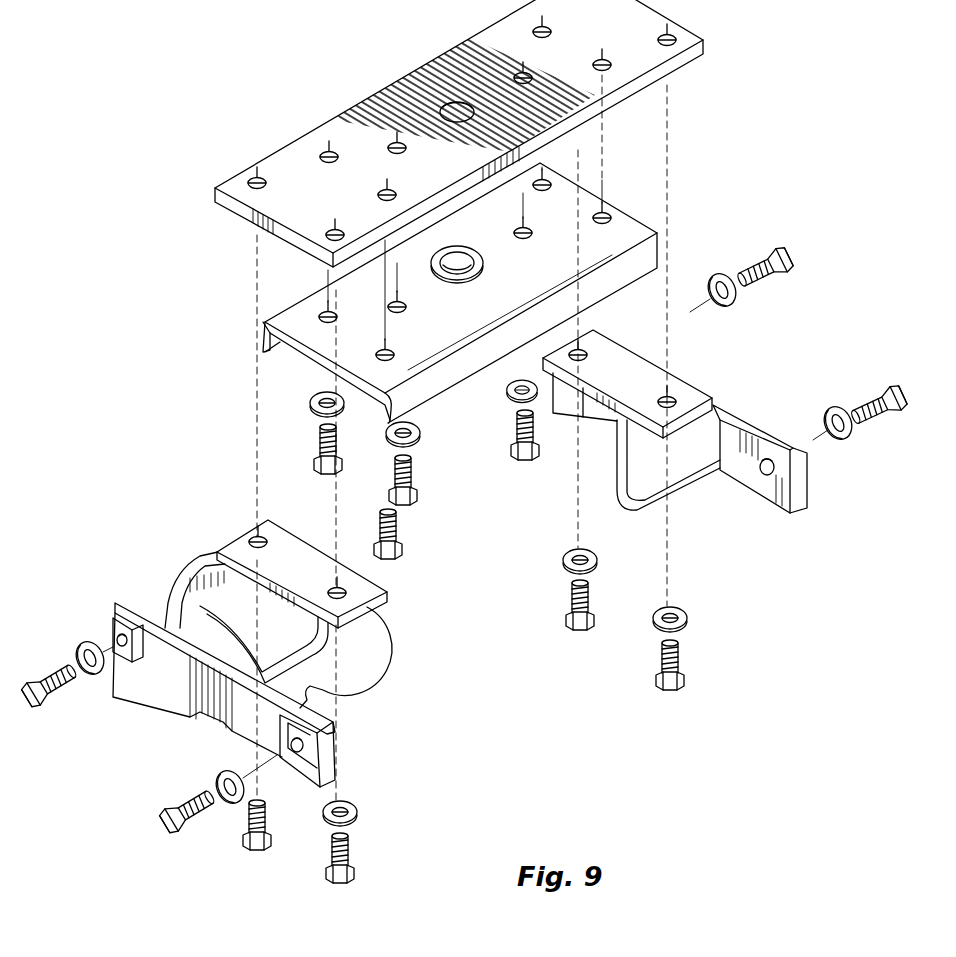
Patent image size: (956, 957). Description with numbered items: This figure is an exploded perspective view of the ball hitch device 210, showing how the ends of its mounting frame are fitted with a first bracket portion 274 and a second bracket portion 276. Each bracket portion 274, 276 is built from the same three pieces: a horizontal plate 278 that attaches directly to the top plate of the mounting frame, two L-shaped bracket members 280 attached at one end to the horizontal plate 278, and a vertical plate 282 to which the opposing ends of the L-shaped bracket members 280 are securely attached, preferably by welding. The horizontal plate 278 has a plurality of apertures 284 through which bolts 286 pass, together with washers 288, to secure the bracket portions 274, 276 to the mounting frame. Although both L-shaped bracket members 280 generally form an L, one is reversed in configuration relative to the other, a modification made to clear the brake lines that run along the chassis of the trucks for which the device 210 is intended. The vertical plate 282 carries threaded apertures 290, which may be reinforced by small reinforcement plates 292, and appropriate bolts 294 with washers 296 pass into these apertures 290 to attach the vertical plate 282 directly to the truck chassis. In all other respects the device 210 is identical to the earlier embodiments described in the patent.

The device 210 is at (328, 100).
The bracket portion 274 is at (188, 558).
The bracket portion 276 is at (713, 395).
The horizontal plate 278 is at (290, 540).
The L-shaped bracket member 280 is at (170, 603).
The vertical plate 282 is at (165, 695).
The aperture 284 is at (332, 590).
The bolt 286 is at (330, 855).
The washer 288 is at (357, 808).
The aperture 290 is at (340, 742).
The reinforcement plate 292 is at (338, 770).
The bolt 294 is at (178, 828).
The washer 296 is at (215, 787).